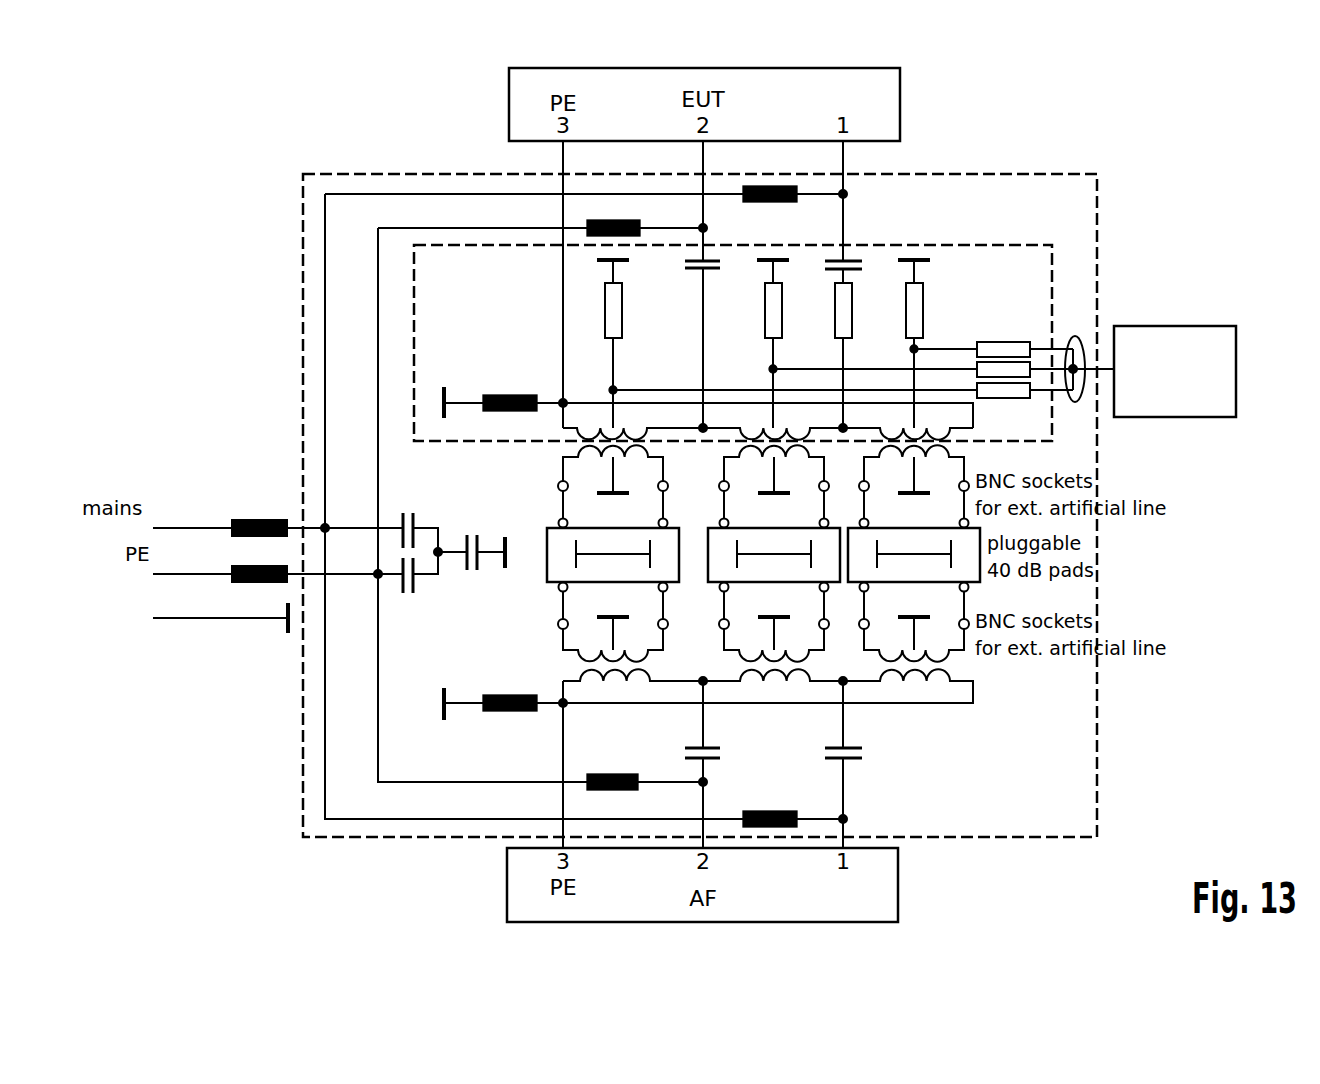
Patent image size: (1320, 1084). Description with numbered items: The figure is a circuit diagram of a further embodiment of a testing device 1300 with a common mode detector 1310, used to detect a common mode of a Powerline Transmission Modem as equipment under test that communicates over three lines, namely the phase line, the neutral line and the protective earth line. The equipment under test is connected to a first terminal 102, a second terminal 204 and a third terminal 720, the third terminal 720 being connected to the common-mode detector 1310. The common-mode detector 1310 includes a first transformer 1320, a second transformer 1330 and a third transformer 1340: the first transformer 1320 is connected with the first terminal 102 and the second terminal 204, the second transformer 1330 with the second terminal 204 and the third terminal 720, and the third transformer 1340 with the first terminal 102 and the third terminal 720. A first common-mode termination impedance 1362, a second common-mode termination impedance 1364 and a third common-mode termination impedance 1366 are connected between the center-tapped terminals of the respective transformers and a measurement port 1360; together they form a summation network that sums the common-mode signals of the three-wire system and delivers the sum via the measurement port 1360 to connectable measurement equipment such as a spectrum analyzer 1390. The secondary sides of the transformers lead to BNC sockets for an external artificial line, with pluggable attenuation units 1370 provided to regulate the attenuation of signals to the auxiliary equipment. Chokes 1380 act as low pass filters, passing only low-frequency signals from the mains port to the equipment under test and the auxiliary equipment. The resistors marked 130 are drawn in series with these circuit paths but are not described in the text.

The first terminal 102 is at (845, 163).
The resistor 130 is at (833, 325).
The second terminal 204 is at (703, 157).
The third terminal 720 is at (563, 157).
The testing device 1300 is at (1052, 174).
The common mode detector 1310 is at (982, 247).
The first transformer 1320 is at (746, 423).
The second transformer 1330 is at (553, 455).
The third transformer 1340 is at (962, 440).
The measurement port 1360 is at (1073, 345).
The first common-mode termination impedance 1362 is at (975, 365).
The second common-mode termination impedance 1364 is at (1032, 395).
The third common-mode termination impedance 1366 is at (1010, 342).
The pluggable attenuation unit 1370 is at (980, 583).
The choke 1380 is at (610, 222).
The spectrum analyzer 1390 is at (1186, 326).